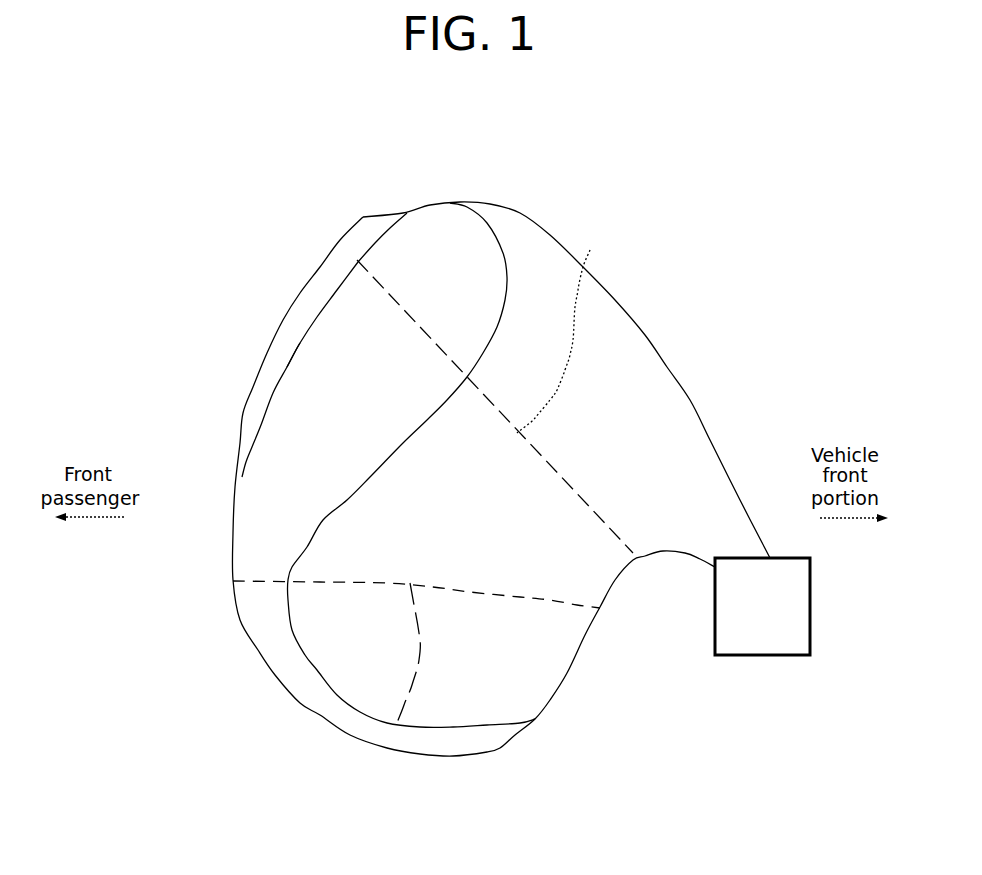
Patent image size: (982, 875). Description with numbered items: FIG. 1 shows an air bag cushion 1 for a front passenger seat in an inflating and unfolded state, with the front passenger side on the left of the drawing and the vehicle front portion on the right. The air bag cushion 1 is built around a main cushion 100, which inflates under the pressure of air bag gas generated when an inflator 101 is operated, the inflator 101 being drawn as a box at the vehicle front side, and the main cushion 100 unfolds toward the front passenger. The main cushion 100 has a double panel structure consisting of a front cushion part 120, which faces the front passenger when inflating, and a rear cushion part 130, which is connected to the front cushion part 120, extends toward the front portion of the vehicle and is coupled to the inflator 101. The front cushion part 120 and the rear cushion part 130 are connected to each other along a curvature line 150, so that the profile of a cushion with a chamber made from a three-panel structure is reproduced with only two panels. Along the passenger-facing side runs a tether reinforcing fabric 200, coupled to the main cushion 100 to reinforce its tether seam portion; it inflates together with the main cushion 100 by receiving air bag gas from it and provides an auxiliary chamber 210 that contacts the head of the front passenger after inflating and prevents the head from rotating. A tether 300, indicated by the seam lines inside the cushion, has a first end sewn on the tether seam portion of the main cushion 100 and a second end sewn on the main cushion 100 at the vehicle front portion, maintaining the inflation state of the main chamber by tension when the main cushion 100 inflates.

The air bag cushion 1 is at (648, 302).
The main cushion 100 is at (715, 428).
The inflator 101 is at (762, 606).
The front cushion part 120 is at (433, 267).
The rear cushion part 130 is at (630, 398).
The curvature line 150 is at (325, 520).
The tether reinforcing fabric 200 is at (327, 253).
The auxiliary chamber 210 is at (290, 340).
The tether 300 is at (590, 250).